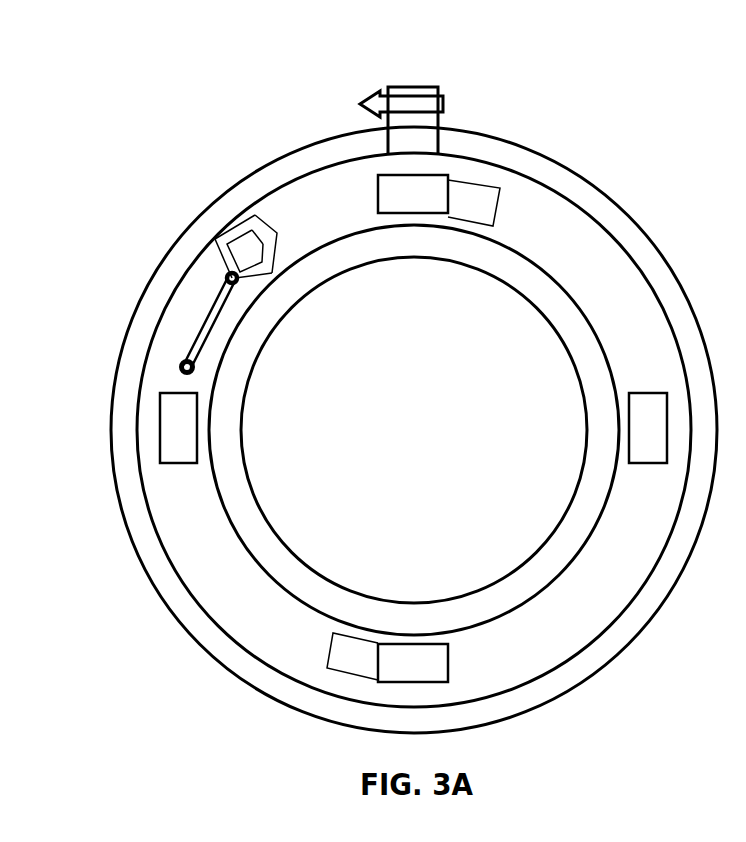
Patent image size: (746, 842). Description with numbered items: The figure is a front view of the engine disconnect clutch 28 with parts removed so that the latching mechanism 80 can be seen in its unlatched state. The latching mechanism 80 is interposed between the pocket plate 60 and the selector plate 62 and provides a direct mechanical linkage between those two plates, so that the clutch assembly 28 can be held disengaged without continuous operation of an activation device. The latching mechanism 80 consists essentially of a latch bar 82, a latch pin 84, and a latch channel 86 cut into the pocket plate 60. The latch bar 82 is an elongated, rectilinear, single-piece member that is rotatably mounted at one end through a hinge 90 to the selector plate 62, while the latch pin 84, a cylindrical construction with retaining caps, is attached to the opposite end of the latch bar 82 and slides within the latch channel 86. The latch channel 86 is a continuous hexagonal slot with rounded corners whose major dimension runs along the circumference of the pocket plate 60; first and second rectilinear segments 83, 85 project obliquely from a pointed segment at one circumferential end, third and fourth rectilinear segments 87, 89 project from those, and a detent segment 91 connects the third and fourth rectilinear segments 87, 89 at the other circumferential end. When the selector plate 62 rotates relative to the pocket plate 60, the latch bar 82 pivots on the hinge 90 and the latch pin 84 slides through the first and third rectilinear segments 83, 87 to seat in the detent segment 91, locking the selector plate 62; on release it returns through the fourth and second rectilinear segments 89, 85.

The engine disconnect clutch 28 is at (687, 143).
The pocket plate 60 is at (587, 187).
The selector plate 62 is at (530, 193).
The latching mechanism 80 is at (256, 358).
The latch bar 82 is at (203, 327).
The first rectilinear segment 83 is at (222, 252).
The latch pin 84 is at (226, 273).
The second rectilinear segment 85 is at (250, 279).
The latch channel 86 is at (248, 203).
The third rectilinear segment 87 is at (237, 232).
The fourth rectilinear segment 89 is at (273, 253).
The hinge 90 is at (182, 362).
The detent segment 91 is at (264, 233).